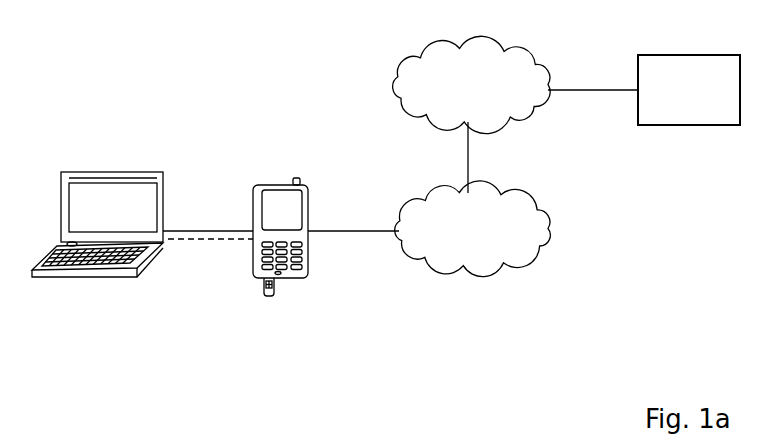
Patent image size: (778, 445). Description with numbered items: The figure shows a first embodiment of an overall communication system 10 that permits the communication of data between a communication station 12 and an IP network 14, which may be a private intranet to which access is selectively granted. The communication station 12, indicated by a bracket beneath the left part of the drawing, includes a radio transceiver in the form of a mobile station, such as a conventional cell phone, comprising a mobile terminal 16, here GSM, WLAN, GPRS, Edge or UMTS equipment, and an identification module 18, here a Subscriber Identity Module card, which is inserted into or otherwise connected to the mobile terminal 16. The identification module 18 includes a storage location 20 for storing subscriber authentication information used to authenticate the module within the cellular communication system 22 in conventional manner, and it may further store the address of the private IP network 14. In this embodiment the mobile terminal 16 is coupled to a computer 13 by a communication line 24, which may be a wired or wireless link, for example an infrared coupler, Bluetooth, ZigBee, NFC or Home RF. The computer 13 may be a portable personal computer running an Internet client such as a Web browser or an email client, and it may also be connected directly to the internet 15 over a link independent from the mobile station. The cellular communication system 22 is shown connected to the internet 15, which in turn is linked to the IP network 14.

The communication system 10 is at (483, 375).
The communication station 12 is at (193, 276).
The computer 13 is at (115, 277).
The IP network 14 is at (689, 90).
The internet 15 is at (515, 84).
The mobile terminal 16 is at (308, 197).
The identification module 18 is at (229, 312).
The storage location 20 is at (265, 297).
The cellular communication system 22 is at (429, 199).
The communication line 24 is at (183, 231).